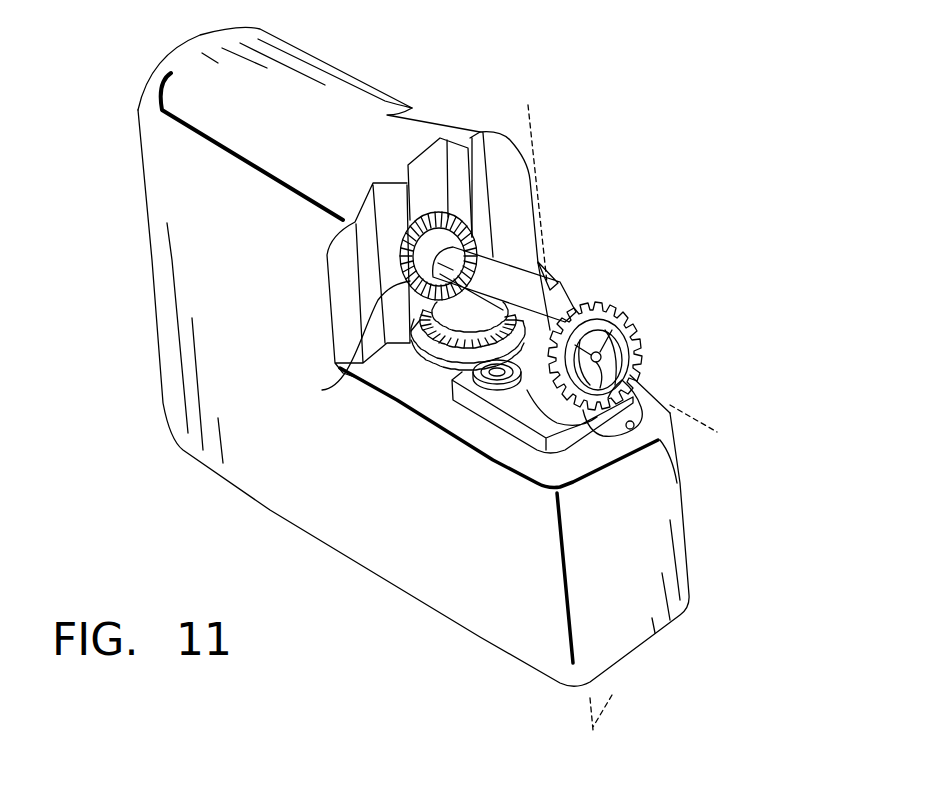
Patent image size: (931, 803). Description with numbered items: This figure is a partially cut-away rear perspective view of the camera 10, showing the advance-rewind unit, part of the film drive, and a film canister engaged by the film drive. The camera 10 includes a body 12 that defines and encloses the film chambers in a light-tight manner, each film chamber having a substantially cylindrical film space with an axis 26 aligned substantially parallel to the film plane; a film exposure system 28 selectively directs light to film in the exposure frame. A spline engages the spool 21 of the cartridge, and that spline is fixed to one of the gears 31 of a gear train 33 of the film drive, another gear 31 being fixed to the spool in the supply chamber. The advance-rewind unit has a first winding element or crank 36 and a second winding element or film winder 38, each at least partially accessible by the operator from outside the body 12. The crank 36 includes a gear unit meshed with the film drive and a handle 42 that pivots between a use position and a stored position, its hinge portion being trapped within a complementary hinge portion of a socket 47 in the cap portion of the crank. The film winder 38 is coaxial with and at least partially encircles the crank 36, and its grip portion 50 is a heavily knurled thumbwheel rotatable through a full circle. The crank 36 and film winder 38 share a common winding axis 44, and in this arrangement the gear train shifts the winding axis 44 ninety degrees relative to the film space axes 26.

The camera 10 is at (395, 55).
The body 12 is at (155, 282).
The spool 21 is at (575, 440).
The axis 26 is at (553, 160).
The film exposure system 28 is at (558, 283).
The gear 31 is at (347, 370).
The gear train 33 is at (320, 407).
The crank 36 is at (673, 439).
The handle 42 is at (660, 440).
The film winder 38 is at (626, 327).
The grip portion 50 is at (603, 300).
The winding axis 44 is at (697, 412).
The socket 47 is at (643, 362).